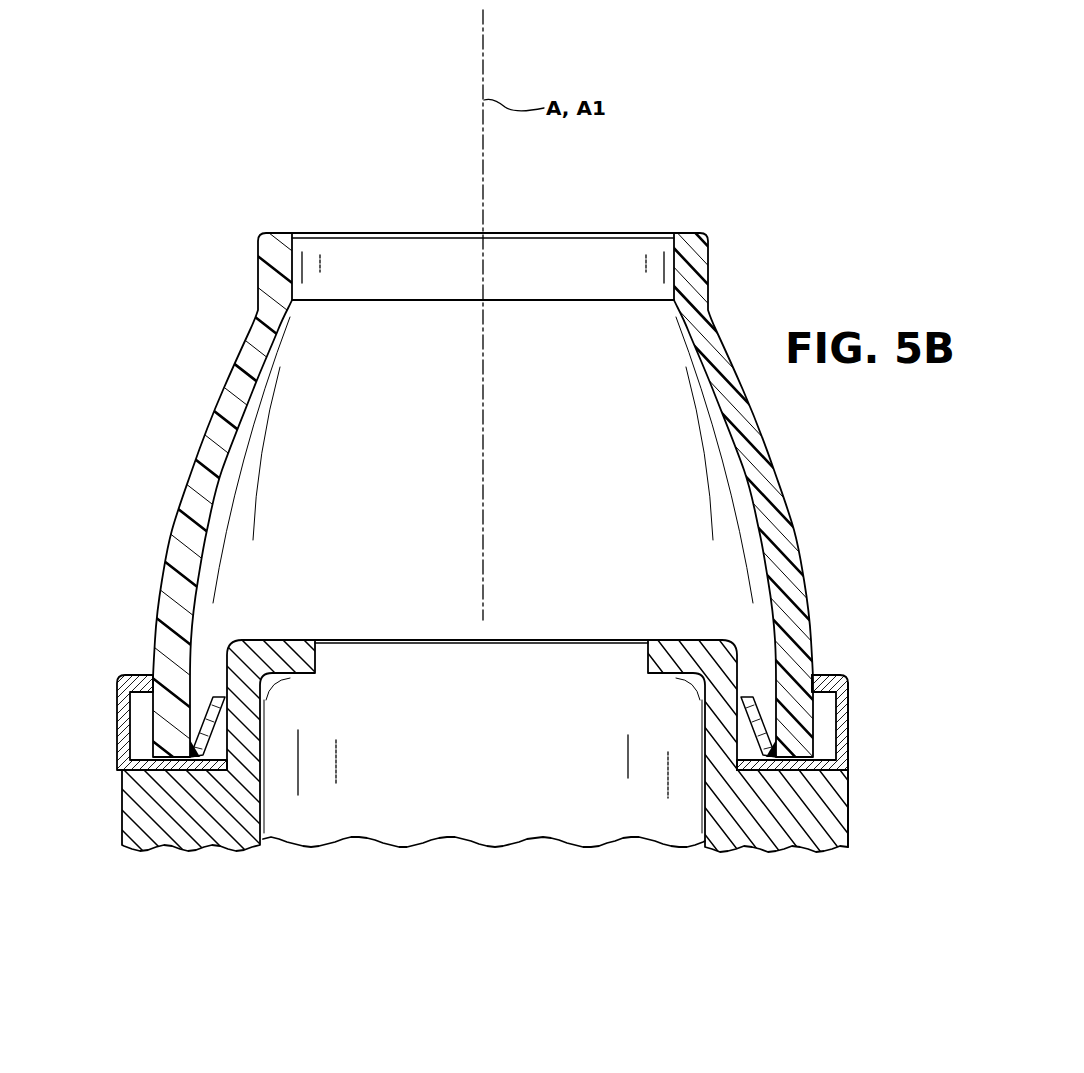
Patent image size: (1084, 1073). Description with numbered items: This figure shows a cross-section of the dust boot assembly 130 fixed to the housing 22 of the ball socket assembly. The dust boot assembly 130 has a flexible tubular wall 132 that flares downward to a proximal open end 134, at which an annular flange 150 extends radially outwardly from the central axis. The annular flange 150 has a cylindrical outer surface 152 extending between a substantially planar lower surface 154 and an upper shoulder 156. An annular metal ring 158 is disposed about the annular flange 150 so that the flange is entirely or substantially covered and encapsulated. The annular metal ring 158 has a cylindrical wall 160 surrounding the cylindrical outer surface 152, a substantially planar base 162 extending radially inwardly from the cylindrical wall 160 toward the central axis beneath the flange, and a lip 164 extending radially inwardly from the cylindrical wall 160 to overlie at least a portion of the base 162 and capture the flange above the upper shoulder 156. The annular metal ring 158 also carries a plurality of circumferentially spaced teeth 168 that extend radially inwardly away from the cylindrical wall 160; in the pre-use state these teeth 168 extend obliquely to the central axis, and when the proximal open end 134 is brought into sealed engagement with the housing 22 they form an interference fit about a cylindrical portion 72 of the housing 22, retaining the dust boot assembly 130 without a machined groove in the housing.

The housing 22 is at (137, 827).
The cylindrical portion 72 is at (693, 705).
The dust boot assembly 130 is at (704, 136).
The tubular wall 132 is at (786, 523).
The proximal open end 134 is at (170, 763).
The annular flange 150 is at (832, 714).
The cylindrical outer surface 152 is at (851, 733).
The lower surface 154 is at (800, 772).
The upper shoulder 156 is at (838, 671).
The annular metal ring 158 is at (866, 677).
The cylindrical wall 160 is at (850, 745).
The base 162 is at (848, 789).
The lip 164 is at (814, 676).
The teeth 168 is at (222, 740).